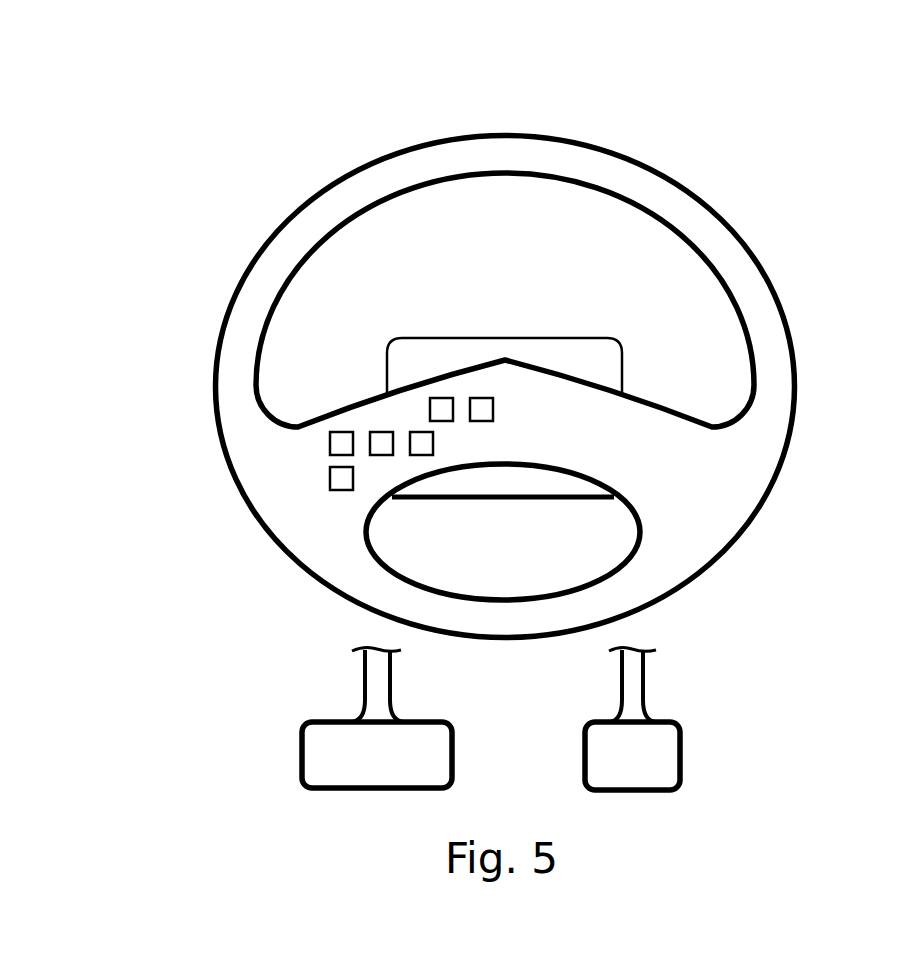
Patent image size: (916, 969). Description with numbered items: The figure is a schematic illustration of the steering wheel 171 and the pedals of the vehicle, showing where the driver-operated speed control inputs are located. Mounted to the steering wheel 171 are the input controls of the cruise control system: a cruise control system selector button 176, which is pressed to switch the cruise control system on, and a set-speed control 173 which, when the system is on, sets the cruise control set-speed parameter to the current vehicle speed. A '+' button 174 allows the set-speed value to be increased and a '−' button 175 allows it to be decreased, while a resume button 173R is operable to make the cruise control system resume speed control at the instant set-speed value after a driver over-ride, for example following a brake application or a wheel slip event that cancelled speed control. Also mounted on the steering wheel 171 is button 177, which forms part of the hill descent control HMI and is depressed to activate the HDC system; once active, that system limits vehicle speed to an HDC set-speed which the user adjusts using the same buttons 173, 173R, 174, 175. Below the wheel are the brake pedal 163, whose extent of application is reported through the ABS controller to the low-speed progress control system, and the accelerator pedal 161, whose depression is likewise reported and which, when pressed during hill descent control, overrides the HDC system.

The steering wheel 171 is at (767, 339).
The set-speed control 173 is at (373, 434).
The resume button 173R is at (418, 455).
The '+' button 174 is at (330, 438).
The '−' button 175 is at (328, 482).
The cruise control system selector button 176 is at (447, 398).
The HDC system button 177 is at (480, 398).
The brake pedal 163 is at (317, 748).
The accelerator pedal 161 is at (660, 750).